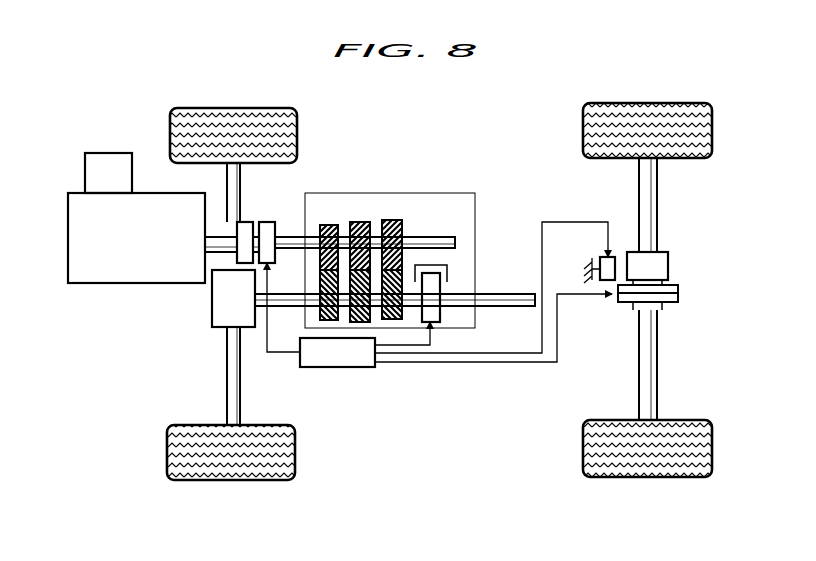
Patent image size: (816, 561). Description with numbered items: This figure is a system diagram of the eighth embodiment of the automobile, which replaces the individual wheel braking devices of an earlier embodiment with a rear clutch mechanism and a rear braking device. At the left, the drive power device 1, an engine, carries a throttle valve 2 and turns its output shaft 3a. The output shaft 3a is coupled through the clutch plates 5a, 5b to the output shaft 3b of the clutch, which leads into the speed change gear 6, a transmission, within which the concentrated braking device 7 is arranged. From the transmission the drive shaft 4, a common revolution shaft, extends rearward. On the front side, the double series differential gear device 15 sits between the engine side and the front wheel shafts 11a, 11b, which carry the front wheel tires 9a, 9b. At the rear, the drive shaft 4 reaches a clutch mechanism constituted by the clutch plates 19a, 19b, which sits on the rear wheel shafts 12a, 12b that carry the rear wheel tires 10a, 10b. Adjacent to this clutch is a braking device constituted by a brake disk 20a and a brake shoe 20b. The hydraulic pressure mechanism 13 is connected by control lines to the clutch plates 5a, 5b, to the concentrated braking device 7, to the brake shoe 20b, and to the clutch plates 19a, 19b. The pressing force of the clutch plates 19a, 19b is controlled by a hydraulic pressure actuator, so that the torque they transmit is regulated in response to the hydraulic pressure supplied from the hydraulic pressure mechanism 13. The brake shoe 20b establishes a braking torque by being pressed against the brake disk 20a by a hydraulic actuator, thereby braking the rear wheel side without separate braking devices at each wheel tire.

The drive power device 1 is at (75, 230).
The throttle valve 2 is at (88, 172).
The output shaft of the engine 3a is at (217, 240).
The output shaft of a clutch 3b is at (292, 240).
The drive shaft 4 is at (503, 295).
The clutch plate 5a is at (247, 227).
The clutch plate 5b is at (272, 227).
The speed change gear 6 is at (428, 193).
The concentrated braking device 7 is at (432, 273).
The front wheel tire 9a is at (218, 116).
The front wheel tire 9b is at (210, 462).
The rear wheel tire 10a is at (637, 117).
The rear wheel tire 10b is at (626, 460).
The front wheel shaft 11a is at (227, 179).
The front wheel shaft 11b is at (227, 392).
The rear wheel shaft 12a is at (657, 220).
The rear wheel shaft 12b is at (657, 402).
The hydraulic pressure mechanism 13 is at (330, 367).
The double series differential gear device 15 is at (218, 304).
The clutch plate 19a is at (678, 290).
The clutch plate 19b is at (678, 298).
The brake disk 20a is at (668, 266).
The brake shoe 20b is at (612, 258).